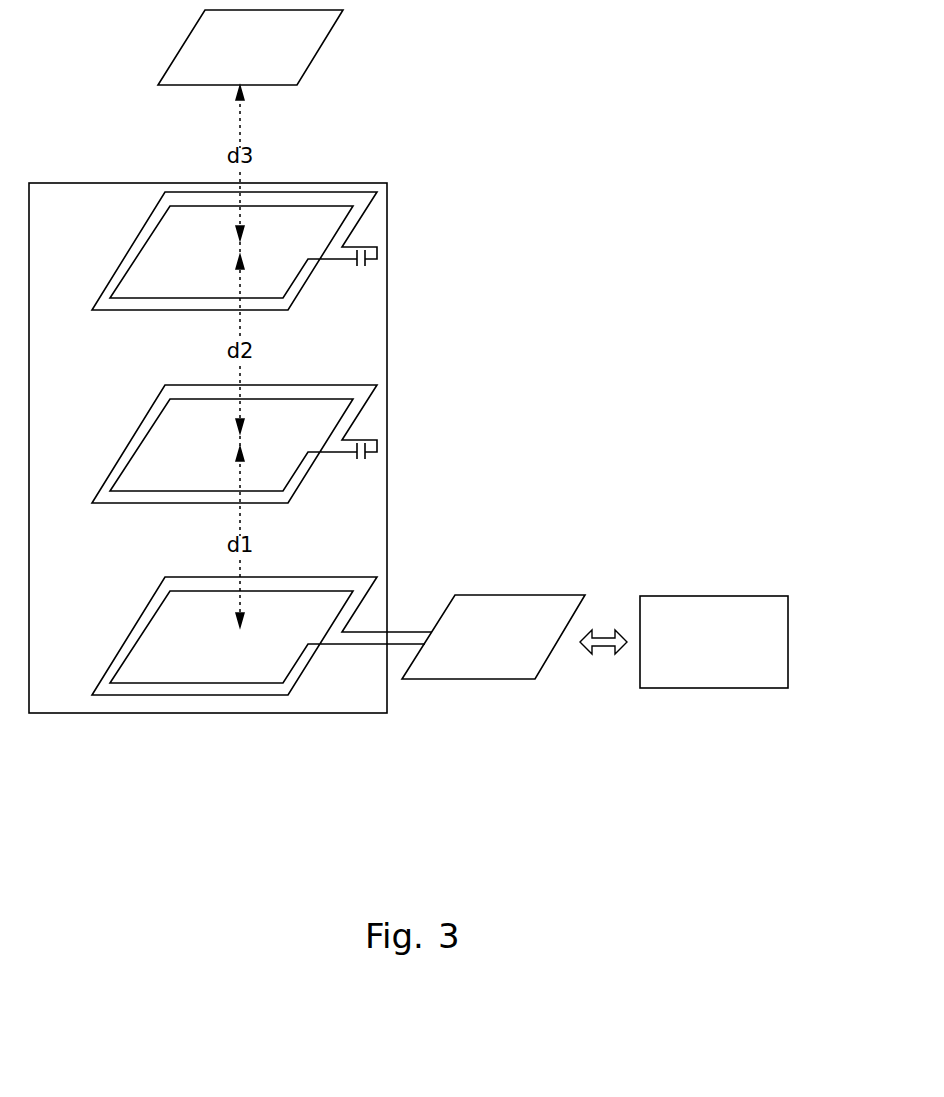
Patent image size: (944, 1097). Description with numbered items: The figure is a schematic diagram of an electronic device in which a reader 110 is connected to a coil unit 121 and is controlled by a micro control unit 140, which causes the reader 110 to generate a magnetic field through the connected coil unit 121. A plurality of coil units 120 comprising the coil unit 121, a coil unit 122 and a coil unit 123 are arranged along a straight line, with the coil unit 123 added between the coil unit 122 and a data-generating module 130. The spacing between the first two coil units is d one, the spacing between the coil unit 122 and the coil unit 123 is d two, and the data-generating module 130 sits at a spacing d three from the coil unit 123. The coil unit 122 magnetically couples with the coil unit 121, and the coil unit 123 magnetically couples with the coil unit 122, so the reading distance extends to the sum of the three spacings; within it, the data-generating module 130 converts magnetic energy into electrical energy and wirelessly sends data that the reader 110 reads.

The reader 110 is at (467, 679).
The coil units 120 is at (220, 713).
The coil unit 121 is at (132, 629).
The coil unit 122 is at (132, 436).
The coil unit 123 is at (132, 243).
The data-generating module 130 is at (228, 57).
The micro control unit 140 is at (715, 688).